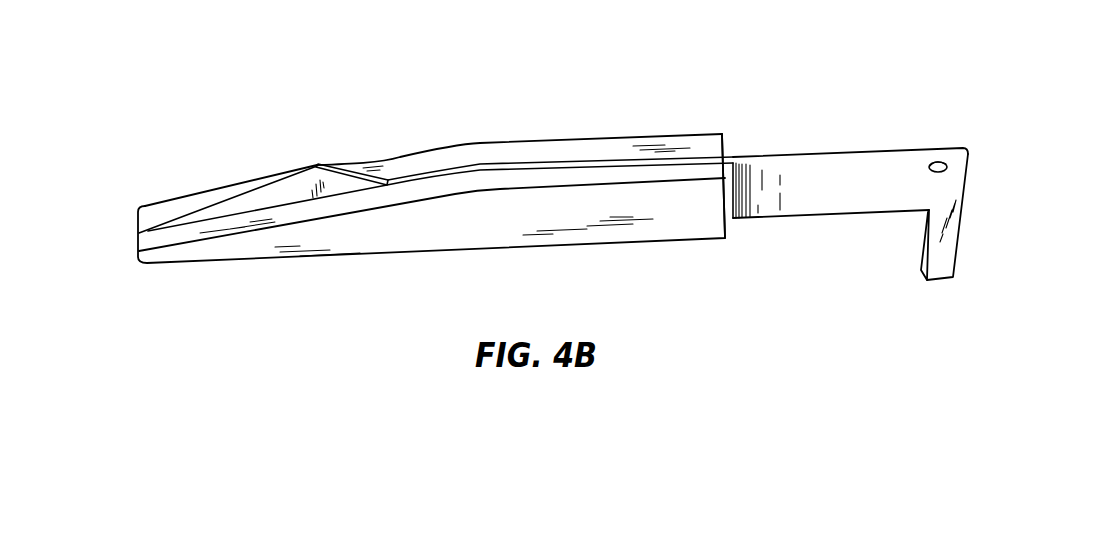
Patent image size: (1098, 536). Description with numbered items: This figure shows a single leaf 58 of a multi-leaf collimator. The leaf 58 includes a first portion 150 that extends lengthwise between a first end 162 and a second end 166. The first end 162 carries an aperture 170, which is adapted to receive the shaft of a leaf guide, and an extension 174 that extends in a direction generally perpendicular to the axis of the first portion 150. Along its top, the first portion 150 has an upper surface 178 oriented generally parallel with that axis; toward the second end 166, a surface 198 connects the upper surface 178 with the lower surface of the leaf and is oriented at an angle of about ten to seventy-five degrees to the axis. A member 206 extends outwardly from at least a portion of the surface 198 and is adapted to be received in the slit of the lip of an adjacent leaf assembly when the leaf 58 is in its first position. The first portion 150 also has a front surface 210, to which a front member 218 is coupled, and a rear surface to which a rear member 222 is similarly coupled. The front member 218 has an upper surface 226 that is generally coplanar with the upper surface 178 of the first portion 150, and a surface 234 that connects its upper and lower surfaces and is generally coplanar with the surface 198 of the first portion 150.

The leaf 58 is at (658, 50).
The first portion 150 is at (797, 168).
The first end 162 is at (888, 307).
The second end 166 is at (106, 267).
The aperture 170 is at (945, 163).
The extension 174 is at (947, 258).
The upper surface 178 is at (885, 153).
The surface 198 is at (397, 179).
The member 206 is at (301, 169).
The front surface 210 is at (800, 203).
The front member 218 is at (669, 232).
The rear member 222 is at (518, 148).
The upper surface 226 is at (567, 178).
The surface 234 is at (301, 213).